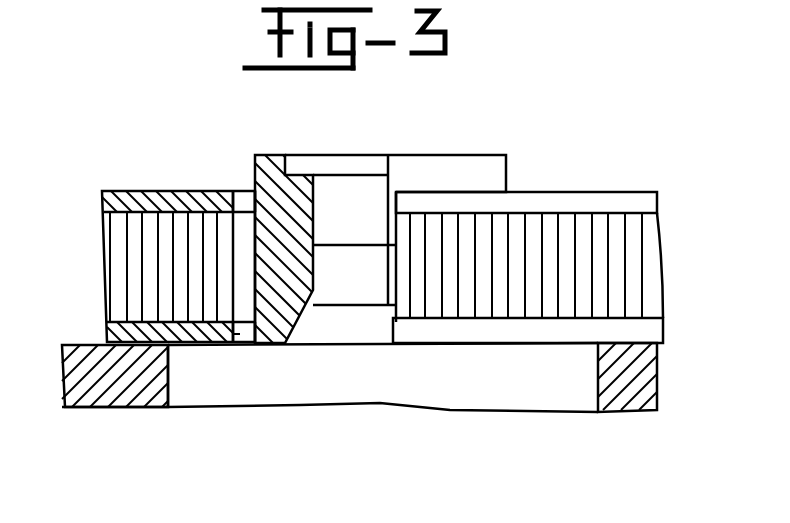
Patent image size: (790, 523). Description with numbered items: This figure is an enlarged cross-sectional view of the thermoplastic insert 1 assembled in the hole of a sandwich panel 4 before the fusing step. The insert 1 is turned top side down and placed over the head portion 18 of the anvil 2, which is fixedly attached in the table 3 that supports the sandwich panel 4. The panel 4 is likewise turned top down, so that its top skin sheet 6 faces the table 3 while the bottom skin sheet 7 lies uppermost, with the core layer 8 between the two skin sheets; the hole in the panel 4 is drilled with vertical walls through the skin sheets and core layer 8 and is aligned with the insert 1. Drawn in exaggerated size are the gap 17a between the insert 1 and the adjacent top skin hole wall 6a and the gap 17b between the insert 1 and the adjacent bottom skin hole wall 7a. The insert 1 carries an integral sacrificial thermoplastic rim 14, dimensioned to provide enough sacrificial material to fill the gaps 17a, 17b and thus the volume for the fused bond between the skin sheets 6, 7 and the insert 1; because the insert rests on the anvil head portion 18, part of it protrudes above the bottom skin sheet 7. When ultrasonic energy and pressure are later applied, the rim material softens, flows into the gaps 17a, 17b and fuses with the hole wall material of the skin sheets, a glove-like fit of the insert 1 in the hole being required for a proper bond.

The insert 1 is at (483, 140).
The anvil 2 is at (472, 416).
The table 3 is at (93, 397).
The sandwich panel 4 is at (113, 182).
The top skin sheet 6 is at (653, 328).
The top skin hole wall 6a is at (230, 344).
The bottom skin sheet 7 is at (637, 200).
The bottom skin hole wall 7a is at (230, 204).
The core layer 8 is at (646, 268).
The sacrificial thermoplastic rim 14 is at (267, 156).
The gap 17a is at (245, 343).
The gap 17b is at (243, 200).
The head portion 18 is at (352, 258).